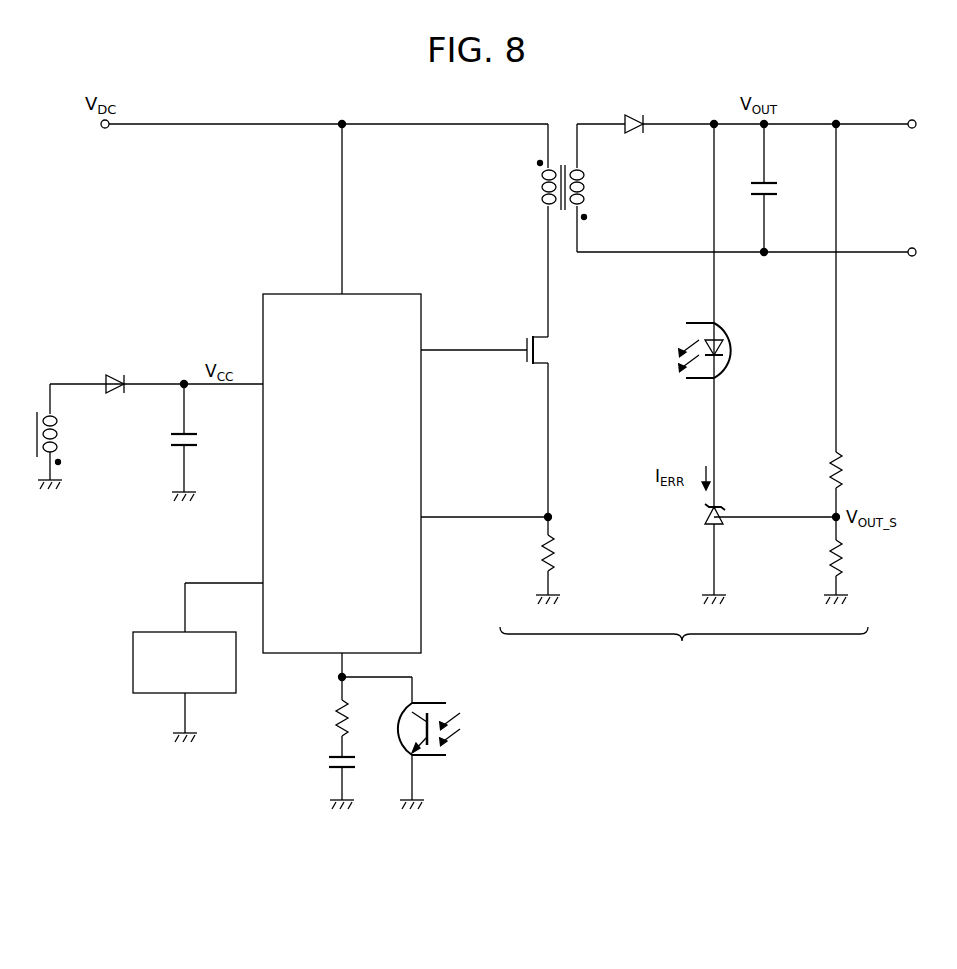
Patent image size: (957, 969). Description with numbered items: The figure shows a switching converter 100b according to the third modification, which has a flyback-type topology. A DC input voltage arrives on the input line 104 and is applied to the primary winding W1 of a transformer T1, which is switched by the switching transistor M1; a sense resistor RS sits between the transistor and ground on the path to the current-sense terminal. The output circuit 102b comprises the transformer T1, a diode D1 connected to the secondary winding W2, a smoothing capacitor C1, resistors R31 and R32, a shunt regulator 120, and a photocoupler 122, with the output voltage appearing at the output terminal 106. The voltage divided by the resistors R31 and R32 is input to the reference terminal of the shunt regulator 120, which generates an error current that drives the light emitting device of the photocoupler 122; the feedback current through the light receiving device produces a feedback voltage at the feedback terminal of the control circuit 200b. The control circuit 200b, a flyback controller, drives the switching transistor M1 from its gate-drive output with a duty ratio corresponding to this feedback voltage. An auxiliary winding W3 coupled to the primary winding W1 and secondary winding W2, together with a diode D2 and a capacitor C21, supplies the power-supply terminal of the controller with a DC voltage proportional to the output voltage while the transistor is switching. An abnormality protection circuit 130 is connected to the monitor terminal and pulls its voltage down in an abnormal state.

The DC input line 104 is at (210, 122).
The output terminal 106 is at (880, 120).
The control circuit 200b is at (305, 294).
The abnormality protection circuit 130 is at (131, 672).
The photocoupler 122 is at (436, 758).
The shunt regulator 120 is at (706, 530).
The output circuit 102b is at (684, 648).
The switching converter 100b is at (494, 863).
The transformer T1 is at (561, 170).
The primary winding W1 is at (522, 164).
The secondary winding W2 is at (562, 112).
The auxiliary winding W3 is at (73, 436).
The diode D1 is at (634, 112).
The diode D2 is at (116, 374).
The smoothing capacitor C1 is at (780, 187).
The capacitor C21 is at (208, 436).
The switching transistor M1 is at (556, 347).
The sense resistor RS is at (560, 560).
The resistor R31 is at (848, 461).
The resistor R32 is at (848, 549).